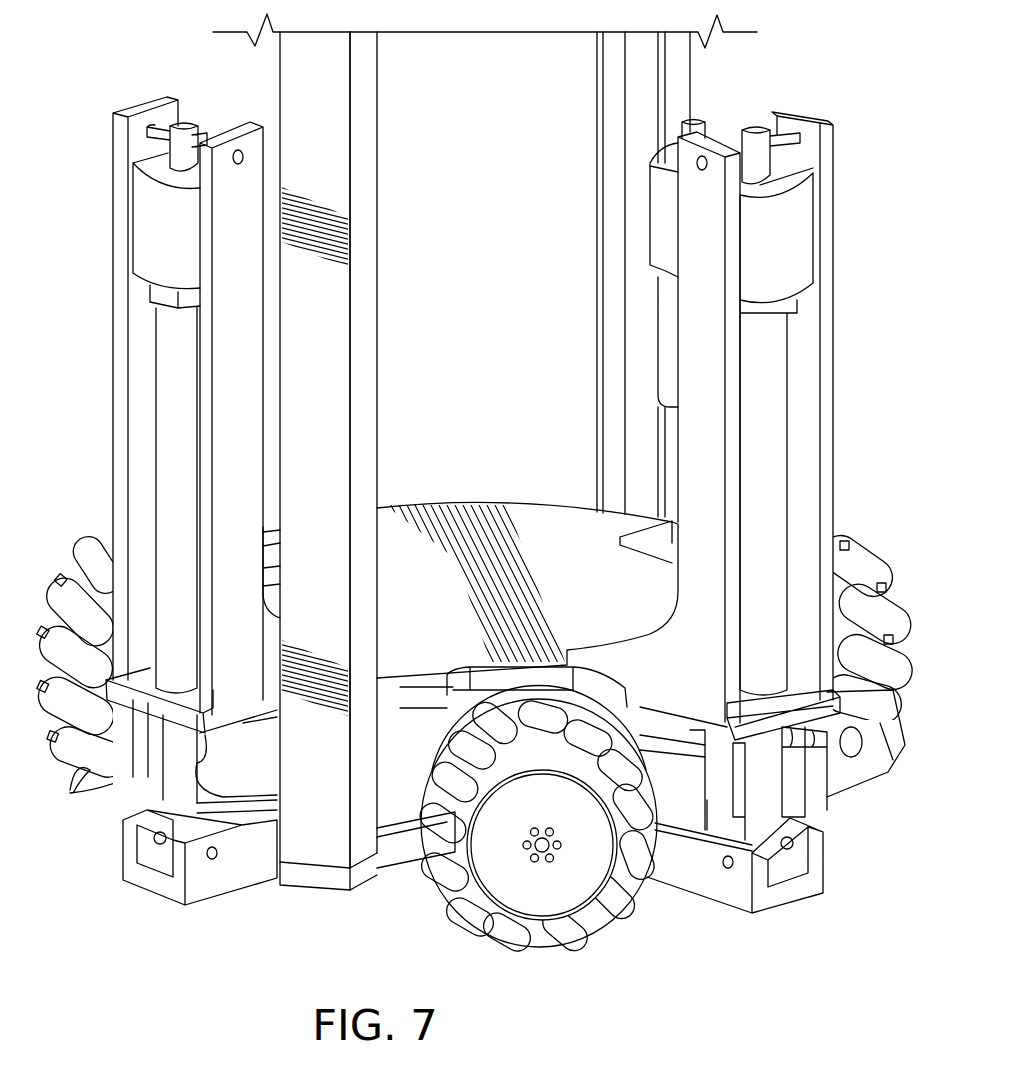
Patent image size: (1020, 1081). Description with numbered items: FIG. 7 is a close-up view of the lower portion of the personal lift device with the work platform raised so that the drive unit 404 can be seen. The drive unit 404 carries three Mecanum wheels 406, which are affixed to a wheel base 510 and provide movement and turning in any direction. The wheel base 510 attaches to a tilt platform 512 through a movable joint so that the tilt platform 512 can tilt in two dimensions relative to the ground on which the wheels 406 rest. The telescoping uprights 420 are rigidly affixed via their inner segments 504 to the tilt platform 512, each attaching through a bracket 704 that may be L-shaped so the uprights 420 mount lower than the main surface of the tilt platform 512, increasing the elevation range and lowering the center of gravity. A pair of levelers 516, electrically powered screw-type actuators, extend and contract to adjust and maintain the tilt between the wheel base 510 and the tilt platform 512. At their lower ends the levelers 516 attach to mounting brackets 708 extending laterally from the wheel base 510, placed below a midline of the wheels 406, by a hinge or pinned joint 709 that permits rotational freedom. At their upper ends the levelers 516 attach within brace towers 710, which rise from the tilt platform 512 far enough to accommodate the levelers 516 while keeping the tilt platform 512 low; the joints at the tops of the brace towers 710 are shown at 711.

The drive unit 404 is at (422, 498).
The Mecanum wheels 406 is at (88, 770).
The telescoping uprights 420 is at (381, 227).
The inner segments 504 is at (372, 94).
The wheel base 510 is at (396, 878).
The tilt platform 512 is at (557, 512).
The levelers 516 is at (155, 412).
The bracket 704 is at (308, 887).
The mounting brackets 708 is at (148, 887).
The hinge or pinned joint 709 is at (168, 850).
The brace towers 710 is at (114, 480).
The actuator connector 711 is at (196, 120).